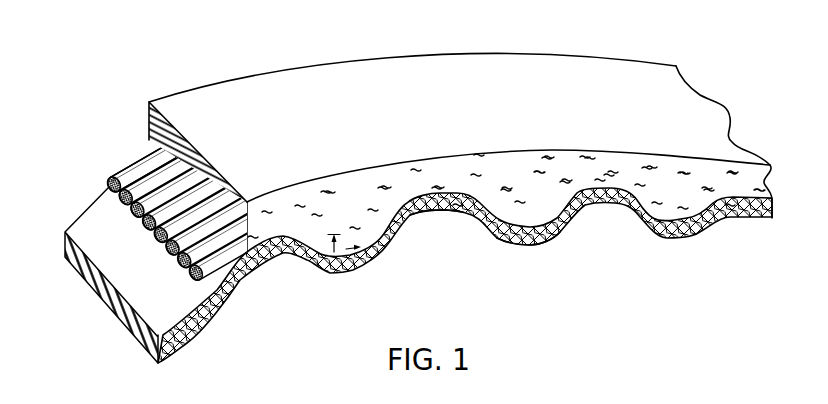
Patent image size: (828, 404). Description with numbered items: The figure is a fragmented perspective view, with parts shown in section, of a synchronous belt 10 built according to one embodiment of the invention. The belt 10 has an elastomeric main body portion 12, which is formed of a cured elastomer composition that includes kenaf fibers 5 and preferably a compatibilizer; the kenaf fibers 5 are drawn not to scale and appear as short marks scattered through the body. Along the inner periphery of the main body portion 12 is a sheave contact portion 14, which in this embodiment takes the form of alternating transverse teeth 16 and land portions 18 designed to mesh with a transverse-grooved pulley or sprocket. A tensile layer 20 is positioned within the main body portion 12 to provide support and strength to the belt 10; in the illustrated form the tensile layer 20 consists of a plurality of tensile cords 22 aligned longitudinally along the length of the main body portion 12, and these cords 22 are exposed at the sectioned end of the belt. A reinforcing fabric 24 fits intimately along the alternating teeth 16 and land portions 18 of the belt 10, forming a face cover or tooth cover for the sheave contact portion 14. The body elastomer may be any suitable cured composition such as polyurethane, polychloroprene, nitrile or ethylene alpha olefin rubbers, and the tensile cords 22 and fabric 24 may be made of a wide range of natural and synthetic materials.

The synchronous belt 10 is at (198, 72).
The main body portion 12 is at (511, 83).
The sheave contact portion 14 is at (293, 262).
The transverse teeth 16 is at (353, 238).
The land portions 18 is at (431, 214).
The tensile layer 20 is at (118, 160).
The tensile cords 22 is at (147, 225).
The reinforcing fabric 24 is at (530, 236).
The kenaf fibers 5 is at (331, 254).